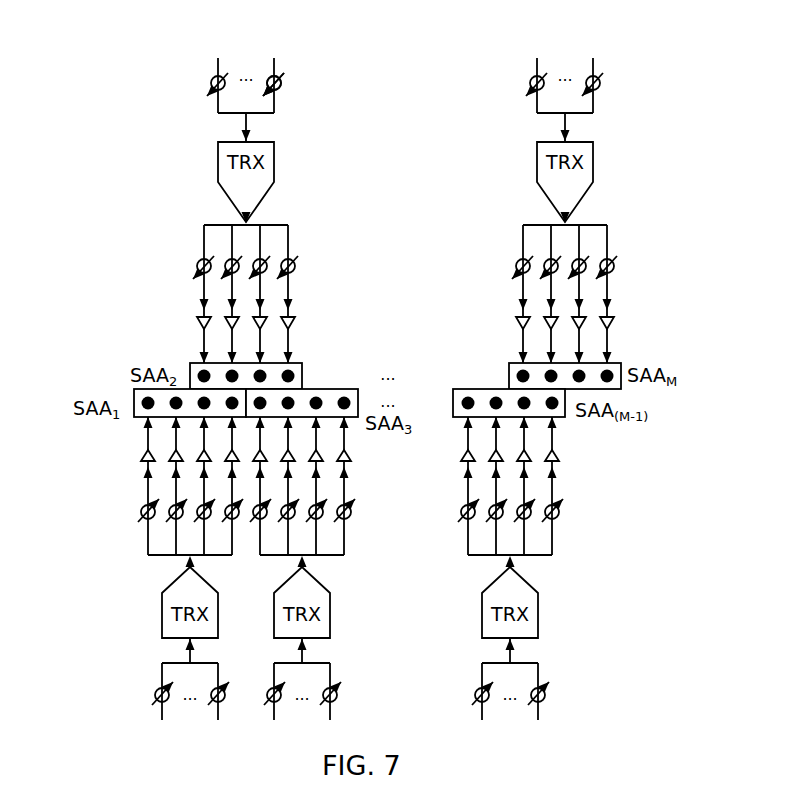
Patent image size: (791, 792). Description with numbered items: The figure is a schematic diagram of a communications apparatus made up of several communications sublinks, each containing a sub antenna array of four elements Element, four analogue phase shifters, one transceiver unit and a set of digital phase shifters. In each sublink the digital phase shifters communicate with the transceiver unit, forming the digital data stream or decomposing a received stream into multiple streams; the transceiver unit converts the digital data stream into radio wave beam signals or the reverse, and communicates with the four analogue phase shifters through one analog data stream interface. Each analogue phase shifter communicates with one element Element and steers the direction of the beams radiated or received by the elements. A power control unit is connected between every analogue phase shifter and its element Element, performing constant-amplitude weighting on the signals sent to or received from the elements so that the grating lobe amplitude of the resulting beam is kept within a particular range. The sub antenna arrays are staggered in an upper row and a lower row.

The element Element is at (172, 341).